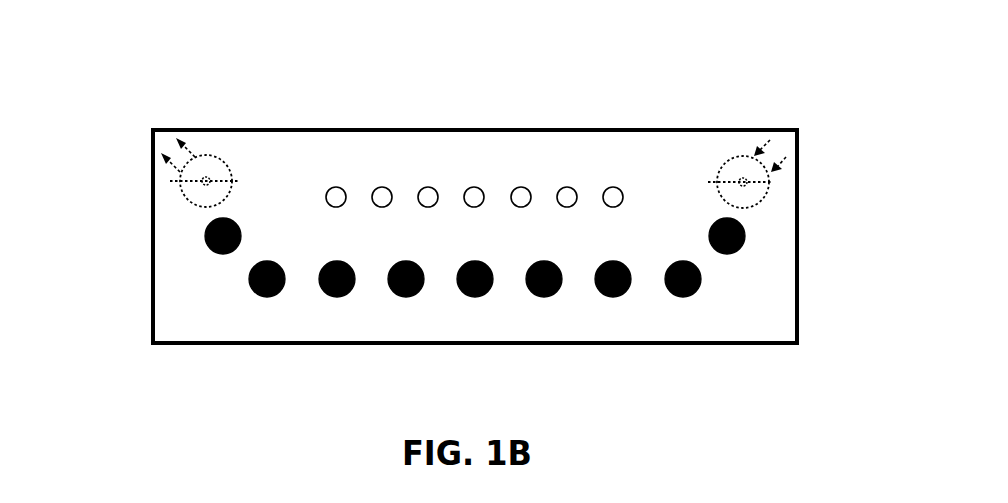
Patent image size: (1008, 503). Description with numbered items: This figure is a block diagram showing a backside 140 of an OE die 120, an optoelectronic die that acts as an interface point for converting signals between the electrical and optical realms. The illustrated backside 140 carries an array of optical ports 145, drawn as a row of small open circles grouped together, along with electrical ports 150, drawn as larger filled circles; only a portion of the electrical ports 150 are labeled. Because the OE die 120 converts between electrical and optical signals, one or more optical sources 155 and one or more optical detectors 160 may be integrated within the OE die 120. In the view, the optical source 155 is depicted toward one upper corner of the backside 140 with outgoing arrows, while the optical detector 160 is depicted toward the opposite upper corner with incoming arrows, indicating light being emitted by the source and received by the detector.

The OE die 120 is at (690, 130).
The backside 140 is at (246, 91).
The optical ports 145 is at (327, 182).
The electrical ports 150 is at (268, 295).
The optical sources 155 is at (178, 192).
The optical detectors 160 is at (768, 188).